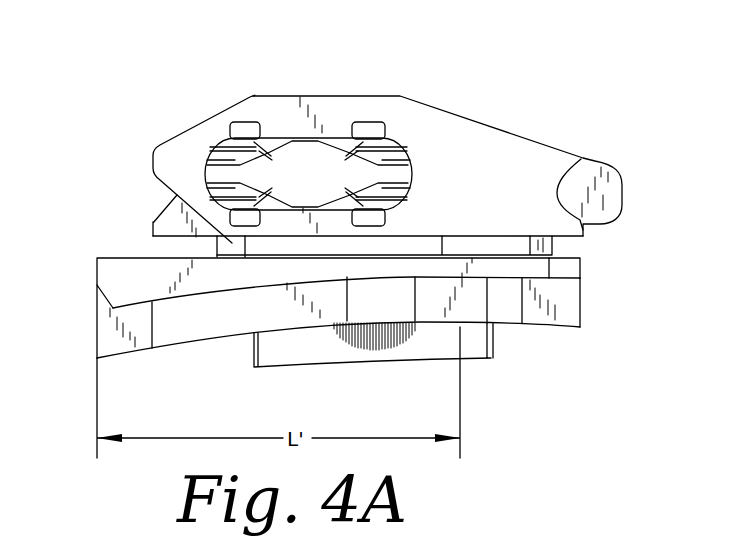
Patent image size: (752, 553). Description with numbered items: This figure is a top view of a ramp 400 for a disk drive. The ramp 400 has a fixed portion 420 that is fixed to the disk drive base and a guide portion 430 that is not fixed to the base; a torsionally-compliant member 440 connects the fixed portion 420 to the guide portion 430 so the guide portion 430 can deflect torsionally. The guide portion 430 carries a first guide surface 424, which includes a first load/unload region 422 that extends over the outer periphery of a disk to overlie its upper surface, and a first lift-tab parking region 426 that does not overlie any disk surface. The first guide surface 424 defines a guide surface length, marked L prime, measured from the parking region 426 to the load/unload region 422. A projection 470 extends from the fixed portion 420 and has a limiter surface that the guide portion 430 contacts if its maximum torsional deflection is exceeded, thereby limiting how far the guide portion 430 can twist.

The ramp 400 is at (165, 66).
The fixed portion 420 is at (497, 142).
The projection 470 is at (177, 194).
The torsionally-compliant member 440 is at (542, 243).
The guide portion 430 is at (122, 262).
The first load/unload region 422 is at (110, 332).
The first guide surface 424 is at (173, 330).
The first lift-tab parking region 426 is at (498, 315).